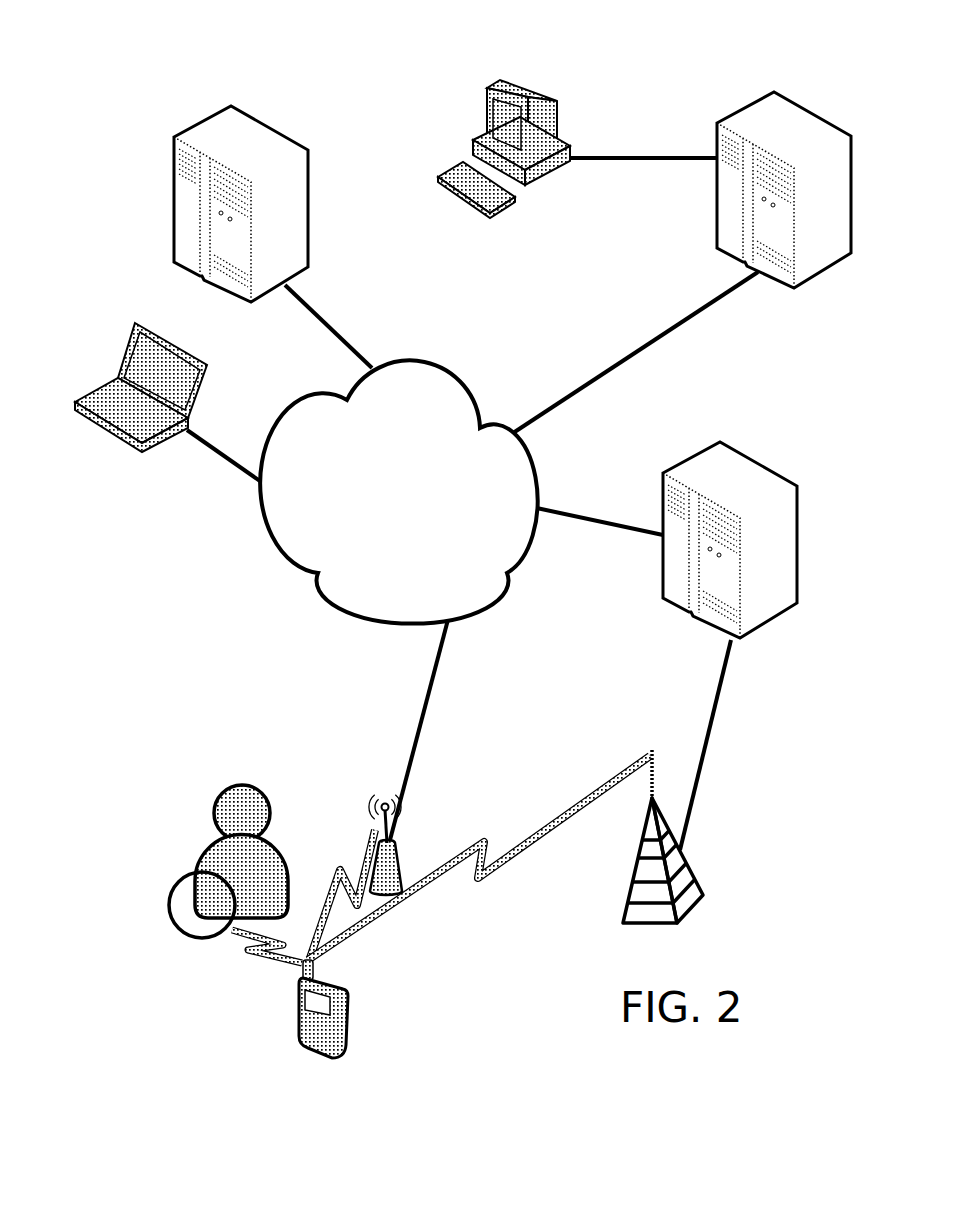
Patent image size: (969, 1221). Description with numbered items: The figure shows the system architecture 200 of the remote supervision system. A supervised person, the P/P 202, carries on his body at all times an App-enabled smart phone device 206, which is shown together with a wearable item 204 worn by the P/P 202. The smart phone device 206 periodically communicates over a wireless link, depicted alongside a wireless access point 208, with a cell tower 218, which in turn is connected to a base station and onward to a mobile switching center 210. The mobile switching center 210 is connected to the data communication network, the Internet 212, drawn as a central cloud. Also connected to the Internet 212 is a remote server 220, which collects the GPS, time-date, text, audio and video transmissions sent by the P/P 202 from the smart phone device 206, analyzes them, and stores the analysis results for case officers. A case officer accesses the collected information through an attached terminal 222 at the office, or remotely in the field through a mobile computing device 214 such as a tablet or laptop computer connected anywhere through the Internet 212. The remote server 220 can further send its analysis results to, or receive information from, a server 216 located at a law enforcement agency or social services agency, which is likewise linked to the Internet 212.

The system 200 is at (256, 60).
The P/P 202 is at (205, 842).
The wearable device 204 is at (172, 925).
The smart phone device 206 is at (303, 1045).
The wireless access point 208 is at (378, 845).
The mobile switching center 210 is at (780, 475).
The data communication network 212 is at (398, 491).
The mobile computing device 214 is at (123, 362).
The server 216 is at (174, 193).
The cell tower 218 is at (623, 913).
The remote server 220 is at (715, 190).
The terminal 222 is at (570, 133).